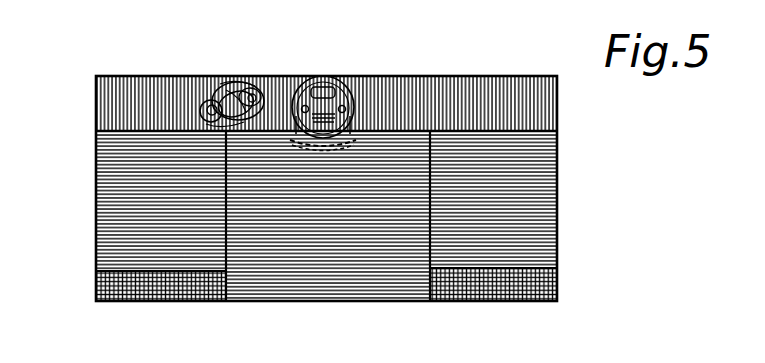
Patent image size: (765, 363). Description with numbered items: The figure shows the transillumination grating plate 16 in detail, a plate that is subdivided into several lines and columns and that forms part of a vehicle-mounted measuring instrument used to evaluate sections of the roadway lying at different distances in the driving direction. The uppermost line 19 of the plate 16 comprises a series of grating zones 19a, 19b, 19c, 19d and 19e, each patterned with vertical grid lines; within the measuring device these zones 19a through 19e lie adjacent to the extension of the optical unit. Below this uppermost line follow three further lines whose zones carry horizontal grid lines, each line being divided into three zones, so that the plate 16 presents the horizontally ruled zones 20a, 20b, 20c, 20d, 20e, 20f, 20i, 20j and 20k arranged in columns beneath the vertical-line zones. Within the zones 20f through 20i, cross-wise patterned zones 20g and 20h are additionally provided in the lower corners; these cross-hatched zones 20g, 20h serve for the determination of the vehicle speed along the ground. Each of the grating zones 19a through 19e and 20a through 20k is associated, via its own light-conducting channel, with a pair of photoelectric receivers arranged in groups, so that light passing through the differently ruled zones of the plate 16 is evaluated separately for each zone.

The transillumination grating plate 16 is at (608, 187).
The uppermost line of grating zones 19 is at (556, 109).
The grating zone 19a is at (289, 75).
The grating zone 19b is at (403, 81).
The grating zone 19c is at (510, 81).
The grating zone 19d is at (141, 87).
The grating zone 19e is at (213, 82).
The grating zone 20a is at (243, 177).
The grating zone 20b is at (327, 215).
The grating zone 20c is at (408, 268).
The grating zone 20d is at (549, 165).
The grating zone 20e is at (549, 217).
The grating zone 20f is at (549, 256).
The cross-wise patterned zone 20g is at (545, 299).
The cross-wise patterned zone 20h is at (100, 302).
The grating zone 20i is at (103, 258).
The grating zone 20j is at (105, 210).
The grating zone 20k is at (95, 151).